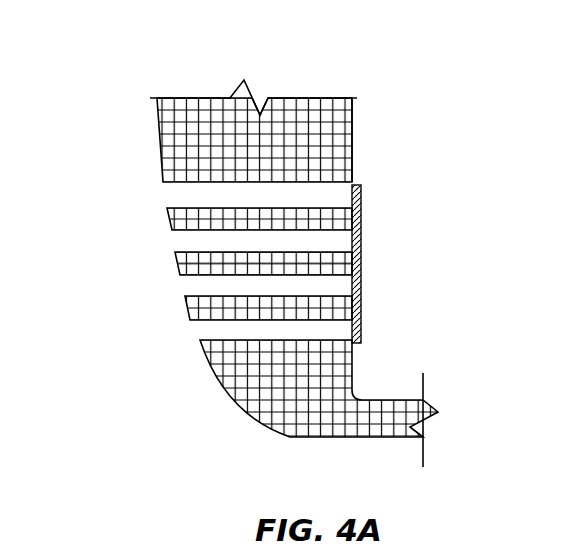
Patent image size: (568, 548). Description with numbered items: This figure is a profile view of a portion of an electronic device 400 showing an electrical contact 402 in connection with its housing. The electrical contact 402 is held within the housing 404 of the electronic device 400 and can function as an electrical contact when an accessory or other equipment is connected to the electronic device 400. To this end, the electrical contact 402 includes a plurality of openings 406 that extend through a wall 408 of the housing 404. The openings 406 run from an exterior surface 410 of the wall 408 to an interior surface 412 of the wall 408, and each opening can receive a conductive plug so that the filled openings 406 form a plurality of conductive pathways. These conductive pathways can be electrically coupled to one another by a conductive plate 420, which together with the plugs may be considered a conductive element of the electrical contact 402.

The electronic device 400 is at (378, 52).
The electrical contact 402 is at (378, 180).
The housing 404 is at (373, 447).
The openings 406 is at (200, 330).
The wall 408 is at (182, 136).
The exterior surface 410 is at (158, 383).
The interior surface 412 is at (447, 278).
The conductive plate 420 is at (358, 240).